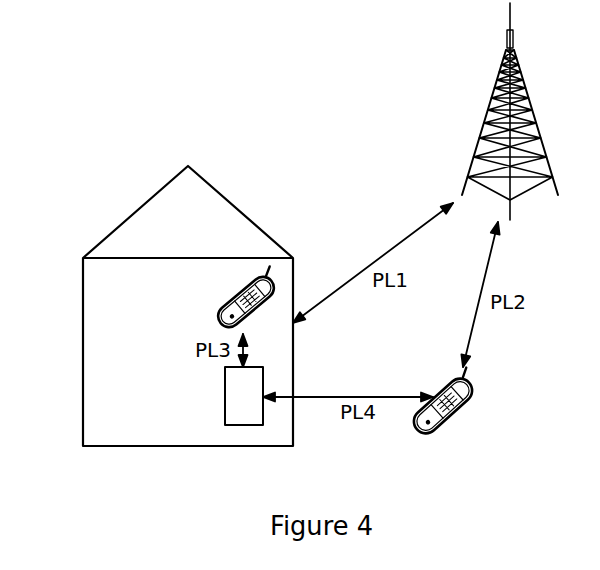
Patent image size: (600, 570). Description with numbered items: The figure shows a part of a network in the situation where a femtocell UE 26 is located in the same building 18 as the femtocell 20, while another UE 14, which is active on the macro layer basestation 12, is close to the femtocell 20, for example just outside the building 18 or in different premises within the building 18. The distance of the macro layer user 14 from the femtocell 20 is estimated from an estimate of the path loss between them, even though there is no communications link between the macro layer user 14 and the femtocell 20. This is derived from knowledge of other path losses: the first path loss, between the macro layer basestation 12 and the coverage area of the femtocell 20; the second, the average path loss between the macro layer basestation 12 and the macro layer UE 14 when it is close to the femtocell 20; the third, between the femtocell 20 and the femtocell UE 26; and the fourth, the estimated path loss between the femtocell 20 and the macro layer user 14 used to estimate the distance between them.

The macro layer basestation 12 is at (507, 35).
The macro layer UE 14 is at (470, 405).
The building 18 is at (83, 281).
The femtocell 20 is at (242, 425).
The femtocell UE 26 is at (266, 278).